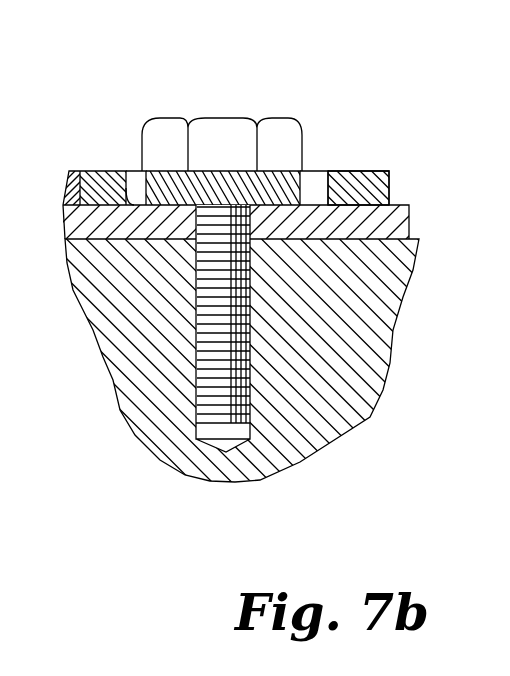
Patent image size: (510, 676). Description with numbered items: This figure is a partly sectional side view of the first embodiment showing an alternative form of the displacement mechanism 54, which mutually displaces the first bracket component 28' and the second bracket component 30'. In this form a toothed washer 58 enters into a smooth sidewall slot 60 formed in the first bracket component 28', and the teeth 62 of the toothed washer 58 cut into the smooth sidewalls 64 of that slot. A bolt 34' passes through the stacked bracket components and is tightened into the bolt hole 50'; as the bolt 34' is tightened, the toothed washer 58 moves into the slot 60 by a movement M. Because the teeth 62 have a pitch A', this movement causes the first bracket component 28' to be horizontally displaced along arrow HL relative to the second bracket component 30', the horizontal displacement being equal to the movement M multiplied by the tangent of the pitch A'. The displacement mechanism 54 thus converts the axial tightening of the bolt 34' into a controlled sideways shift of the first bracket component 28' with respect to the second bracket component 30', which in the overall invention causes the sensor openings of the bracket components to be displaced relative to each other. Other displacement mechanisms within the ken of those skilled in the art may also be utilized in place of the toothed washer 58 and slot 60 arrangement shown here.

The first bracket component 28' is at (243, 138).
The second bracket component 30' is at (93, 136).
The bolt 34' is at (222, 92).
The bolt hole 50' is at (227, 382).
The displacement mechanism 54 is at (135, 152).
The toothed washer 58 is at (302, 186).
The smooth sidewall slot 60 is at (328, 187).
The teeth 62 is at (243, 182).
The smooth sidewalls 64 is at (128, 172).
The arrow HL is at (437, 183).